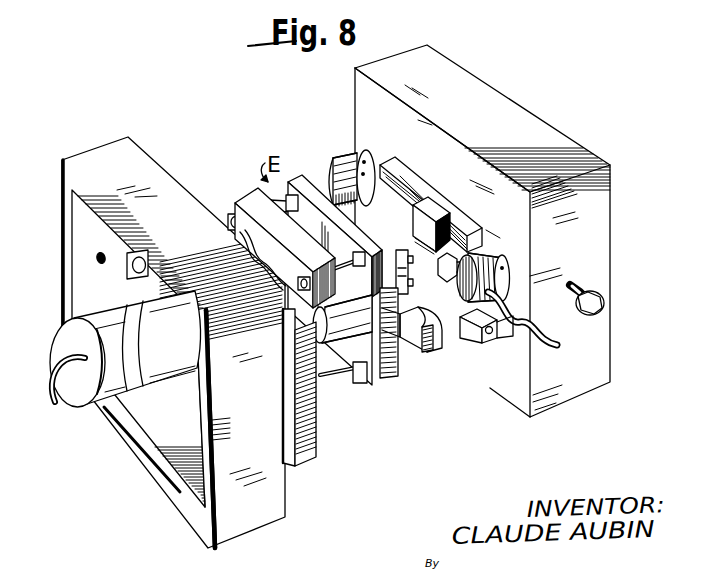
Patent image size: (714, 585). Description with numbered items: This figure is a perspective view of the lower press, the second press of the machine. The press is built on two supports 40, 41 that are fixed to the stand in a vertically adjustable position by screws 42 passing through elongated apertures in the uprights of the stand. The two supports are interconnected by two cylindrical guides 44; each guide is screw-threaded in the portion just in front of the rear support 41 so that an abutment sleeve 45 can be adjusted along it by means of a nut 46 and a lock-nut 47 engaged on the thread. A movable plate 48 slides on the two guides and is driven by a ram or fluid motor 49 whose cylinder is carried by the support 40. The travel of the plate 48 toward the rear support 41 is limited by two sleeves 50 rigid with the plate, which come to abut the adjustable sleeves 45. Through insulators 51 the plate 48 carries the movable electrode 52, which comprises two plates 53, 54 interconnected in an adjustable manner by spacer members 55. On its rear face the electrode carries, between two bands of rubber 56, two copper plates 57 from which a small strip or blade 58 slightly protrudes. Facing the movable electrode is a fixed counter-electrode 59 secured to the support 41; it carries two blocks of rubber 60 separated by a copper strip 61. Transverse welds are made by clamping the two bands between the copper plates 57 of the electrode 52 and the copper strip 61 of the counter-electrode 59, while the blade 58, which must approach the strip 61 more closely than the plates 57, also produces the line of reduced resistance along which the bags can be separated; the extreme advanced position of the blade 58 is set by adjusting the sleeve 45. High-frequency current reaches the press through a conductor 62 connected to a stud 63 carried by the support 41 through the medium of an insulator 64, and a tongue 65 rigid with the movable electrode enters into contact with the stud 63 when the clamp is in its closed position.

The support 40 is at (162, 188).
The support 41 is at (515, 128).
The screw 42 is at (600, 296).
The cylindrical guide 44 is at (387, 316).
The abutment sleeve 45 is at (335, 176).
The nut 46 is at (478, 258).
The lock-nut 47 is at (369, 164).
The movable plate 48 is at (308, 421).
The ram or fluid motor 49 is at (167, 335).
The sleeve 50 is at (226, 216).
The insulator 51 is at (252, 260).
The movable electrode 52 is at (273, 203).
The plate 53 is at (307, 299).
The plate 54 is at (397, 373).
The spacer member 55 is at (283, 207).
The band of rubber 56 is at (400, 256).
The copper plate 57 is at (401, 275).
The blade 58 is at (439, 272).
The counter-electrode 59 is at (415, 206).
The block of rubber 60 is at (410, 229).
The copper strip 61 is at (383, 228).
The conductor 62 is at (540, 341).
The stud 63 is at (463, 344).
The insulator 64 is at (514, 340).
The tongue 65 is at (430, 357).